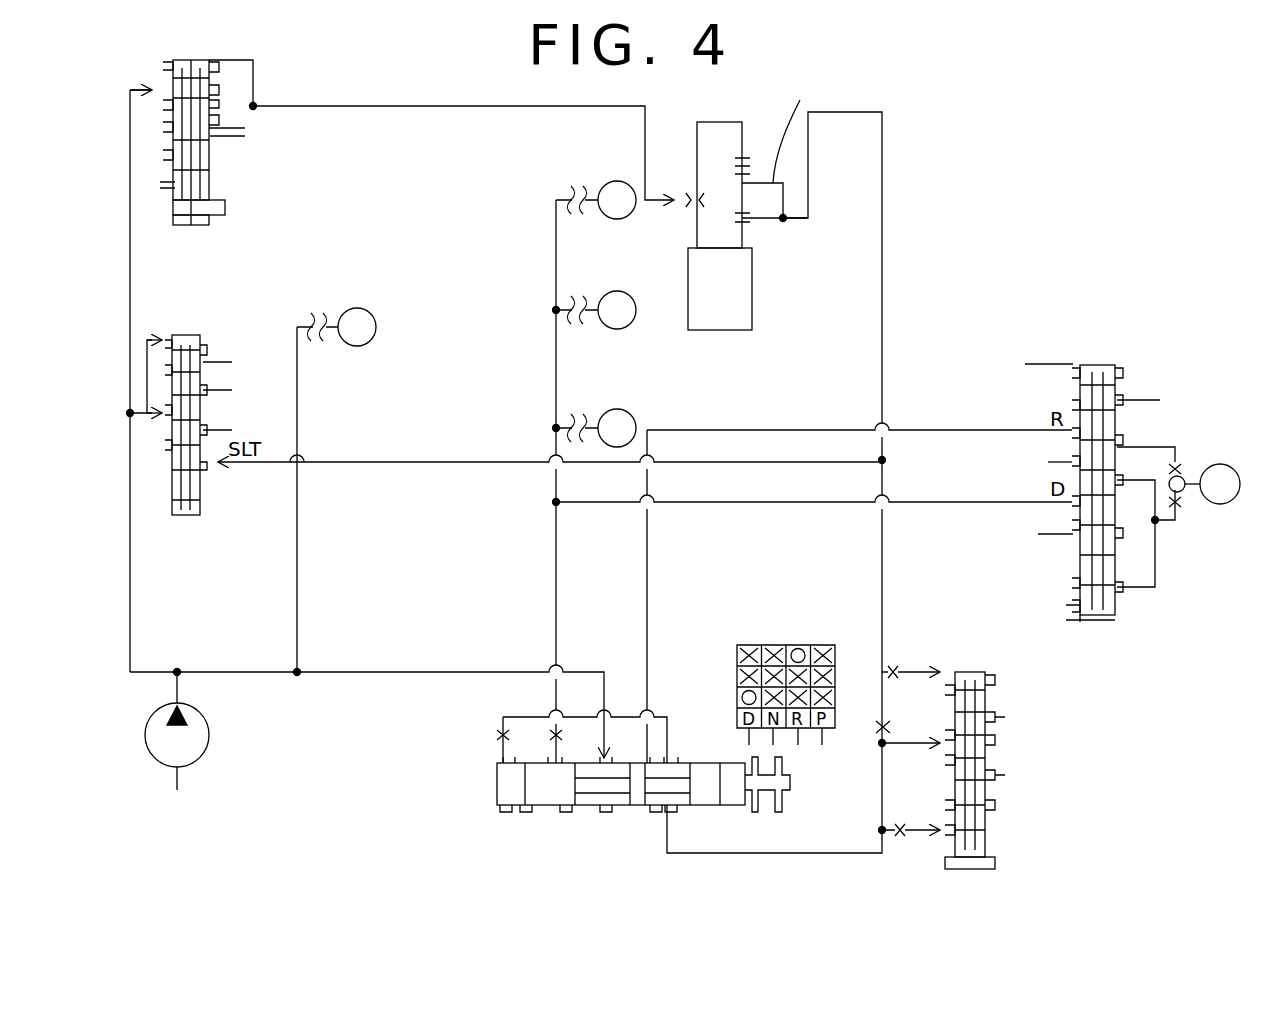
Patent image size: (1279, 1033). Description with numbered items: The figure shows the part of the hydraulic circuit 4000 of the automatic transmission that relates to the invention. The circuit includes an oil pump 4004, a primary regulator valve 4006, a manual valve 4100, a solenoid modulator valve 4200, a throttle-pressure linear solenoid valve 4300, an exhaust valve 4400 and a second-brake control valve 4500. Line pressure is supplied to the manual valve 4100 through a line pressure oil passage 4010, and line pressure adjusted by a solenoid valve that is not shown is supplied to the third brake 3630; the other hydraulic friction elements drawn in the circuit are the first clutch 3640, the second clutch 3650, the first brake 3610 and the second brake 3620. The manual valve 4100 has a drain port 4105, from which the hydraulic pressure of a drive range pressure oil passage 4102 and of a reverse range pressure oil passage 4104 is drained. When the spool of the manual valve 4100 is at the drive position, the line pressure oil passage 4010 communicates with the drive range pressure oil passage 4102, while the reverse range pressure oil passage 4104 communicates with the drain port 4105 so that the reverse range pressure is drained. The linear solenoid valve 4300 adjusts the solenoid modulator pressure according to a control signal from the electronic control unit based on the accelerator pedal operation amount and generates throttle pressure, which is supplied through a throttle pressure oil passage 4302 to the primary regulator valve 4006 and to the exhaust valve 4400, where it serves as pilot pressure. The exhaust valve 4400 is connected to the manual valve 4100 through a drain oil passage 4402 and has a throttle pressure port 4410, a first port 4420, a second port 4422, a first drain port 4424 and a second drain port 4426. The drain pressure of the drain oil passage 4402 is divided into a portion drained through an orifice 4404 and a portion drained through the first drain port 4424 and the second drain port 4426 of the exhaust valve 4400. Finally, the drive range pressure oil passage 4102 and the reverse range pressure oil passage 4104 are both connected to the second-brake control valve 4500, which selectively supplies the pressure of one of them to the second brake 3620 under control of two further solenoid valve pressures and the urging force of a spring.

The hydraulic circuit 4000 is at (1012, 88).
The solenoid modulator valve 4200 is at (188, 240).
The primary regulator valve 4006 is at (183, 518).
The line pressure oil passage 4010 is at (205, 672).
The oil pump 4004 is at (210, 724).
The B3 brake 3630 is at (350, 308).
The C1 clutch 3640 is at (613, 181).
The C2 clutch 3650 is at (613, 291).
The B1 brake 3610 is at (613, 409).
The B2 brake 3620 is at (1217, 505).
The SLT solenoid valve 4300 is at (764, 236).
The SLT oil passage 4302 is at (843, 112).
The D range pressure oil passage 4102 is at (556, 588).
The R range pressure oil passage 4104 is at (647, 588).
The manual valve 4100 is at (486, 796).
The drain port 4105 is at (679, 814).
The drain oil passage 4402 is at (758, 853).
The orifice 4404 is at (872, 738).
The SLT port 4410 is at (940, 666).
The first port 4420 is at (950, 750).
The second port 4422 is at (948, 838).
The first drain port 4424 is at (1002, 712).
The second drain port 4426 is at (1002, 786).
The exhaust valve 4400 is at (982, 660).
The B2 control valve 4500 is at (1130, 373).